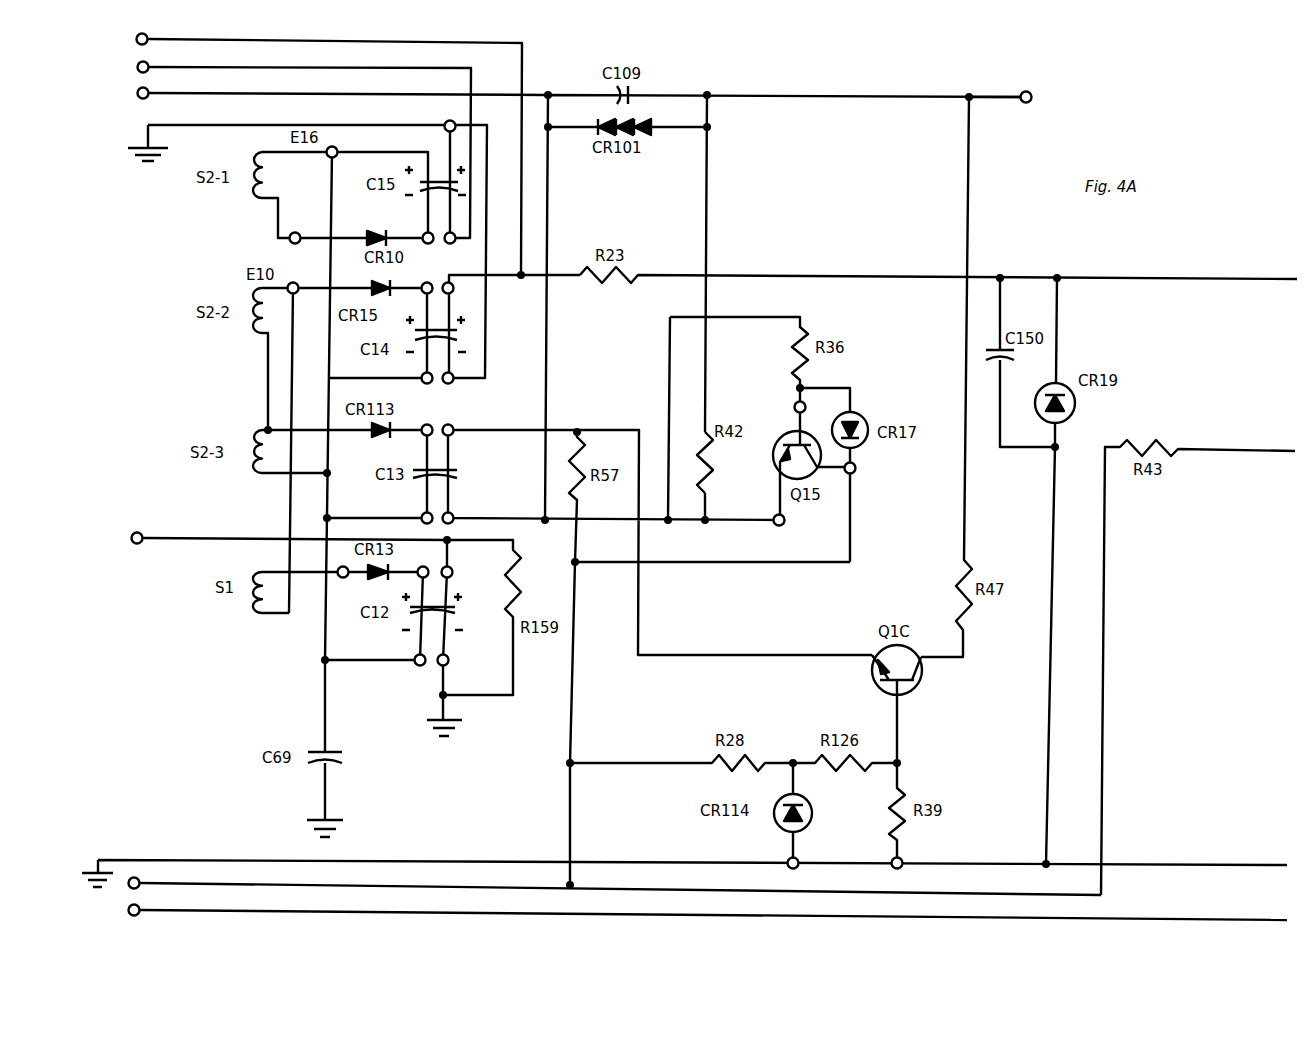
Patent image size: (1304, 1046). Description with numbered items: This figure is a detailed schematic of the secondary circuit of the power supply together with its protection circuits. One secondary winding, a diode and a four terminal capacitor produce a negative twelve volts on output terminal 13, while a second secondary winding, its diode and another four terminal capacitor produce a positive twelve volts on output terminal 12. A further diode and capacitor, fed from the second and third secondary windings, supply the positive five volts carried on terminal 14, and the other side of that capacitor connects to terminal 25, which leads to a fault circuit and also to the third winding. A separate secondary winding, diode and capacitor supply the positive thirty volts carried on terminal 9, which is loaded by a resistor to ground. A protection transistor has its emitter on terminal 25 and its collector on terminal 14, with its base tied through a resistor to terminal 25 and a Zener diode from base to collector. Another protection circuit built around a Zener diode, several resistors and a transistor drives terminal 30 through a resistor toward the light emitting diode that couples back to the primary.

The output terminal 12 is at (136, 40).
The output terminal 13 is at (137, 68).
The terminal 25 is at (138, 99).
The terminal 30 is at (1031, 93).
The terminal 9 is at (132, 533).
The terminal 14 is at (128, 887).